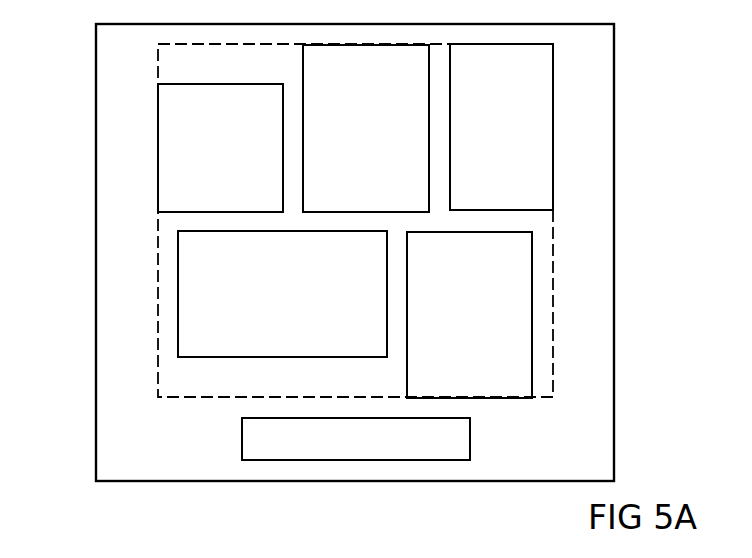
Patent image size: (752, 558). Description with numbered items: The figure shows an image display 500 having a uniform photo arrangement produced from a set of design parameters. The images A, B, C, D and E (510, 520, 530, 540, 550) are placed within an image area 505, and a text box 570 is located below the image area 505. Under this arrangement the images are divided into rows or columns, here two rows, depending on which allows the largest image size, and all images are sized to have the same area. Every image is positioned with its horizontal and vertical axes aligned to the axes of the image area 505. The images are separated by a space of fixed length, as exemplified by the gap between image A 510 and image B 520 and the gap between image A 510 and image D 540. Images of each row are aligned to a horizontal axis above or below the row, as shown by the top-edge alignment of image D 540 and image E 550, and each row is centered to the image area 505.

The image display 500 is at (137, 481).
The image area 505 is at (158, 352).
The image A 510 is at (158, 147).
The image B 520 is at (303, 65).
The image C 530 is at (553, 126).
The image D 540 is at (178, 293).
The image E 550 is at (532, 315).
The text box 570 is at (303, 461).